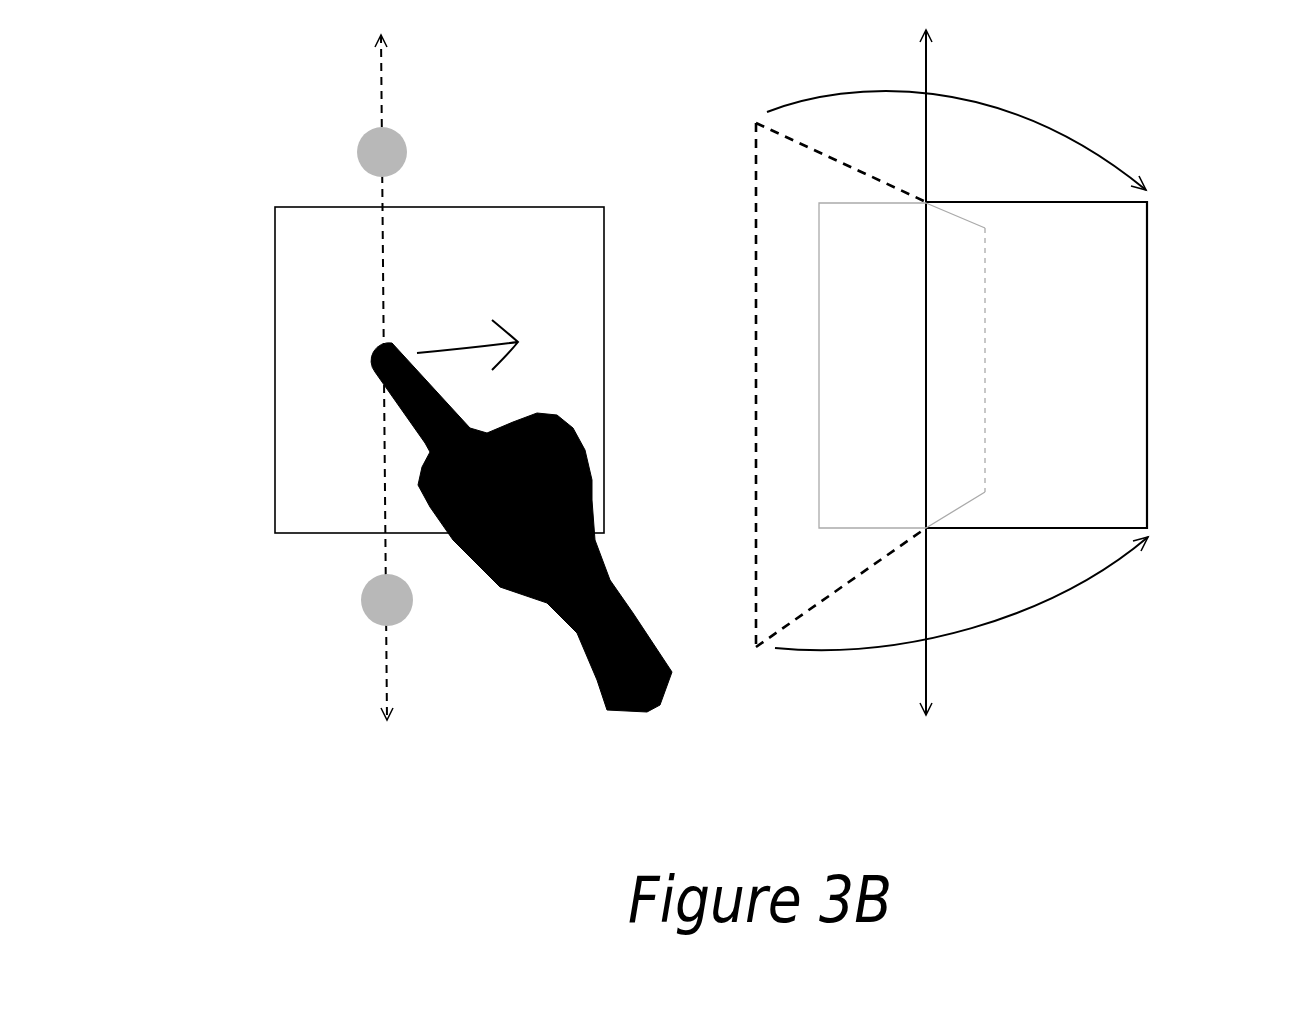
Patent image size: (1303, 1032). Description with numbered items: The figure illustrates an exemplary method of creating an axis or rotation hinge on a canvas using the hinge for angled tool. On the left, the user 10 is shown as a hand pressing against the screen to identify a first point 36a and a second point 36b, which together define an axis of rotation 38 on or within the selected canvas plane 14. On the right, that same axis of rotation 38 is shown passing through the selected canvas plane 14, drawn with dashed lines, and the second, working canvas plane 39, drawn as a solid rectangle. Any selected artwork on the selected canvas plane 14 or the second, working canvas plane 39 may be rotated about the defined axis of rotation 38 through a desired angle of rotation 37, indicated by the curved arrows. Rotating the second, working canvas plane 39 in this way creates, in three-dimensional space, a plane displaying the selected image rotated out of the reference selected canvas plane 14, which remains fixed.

The user 10 is at (632, 718).
The selected canvas plane 14 is at (788, 587).
The first point 36a is at (393, 152).
The second point 36b is at (375, 600).
The angle of rotation 37 is at (1027, 622).
The axis of rotation 38 is at (382, 250).
The second, working canvas plane 39 is at (1147, 392).